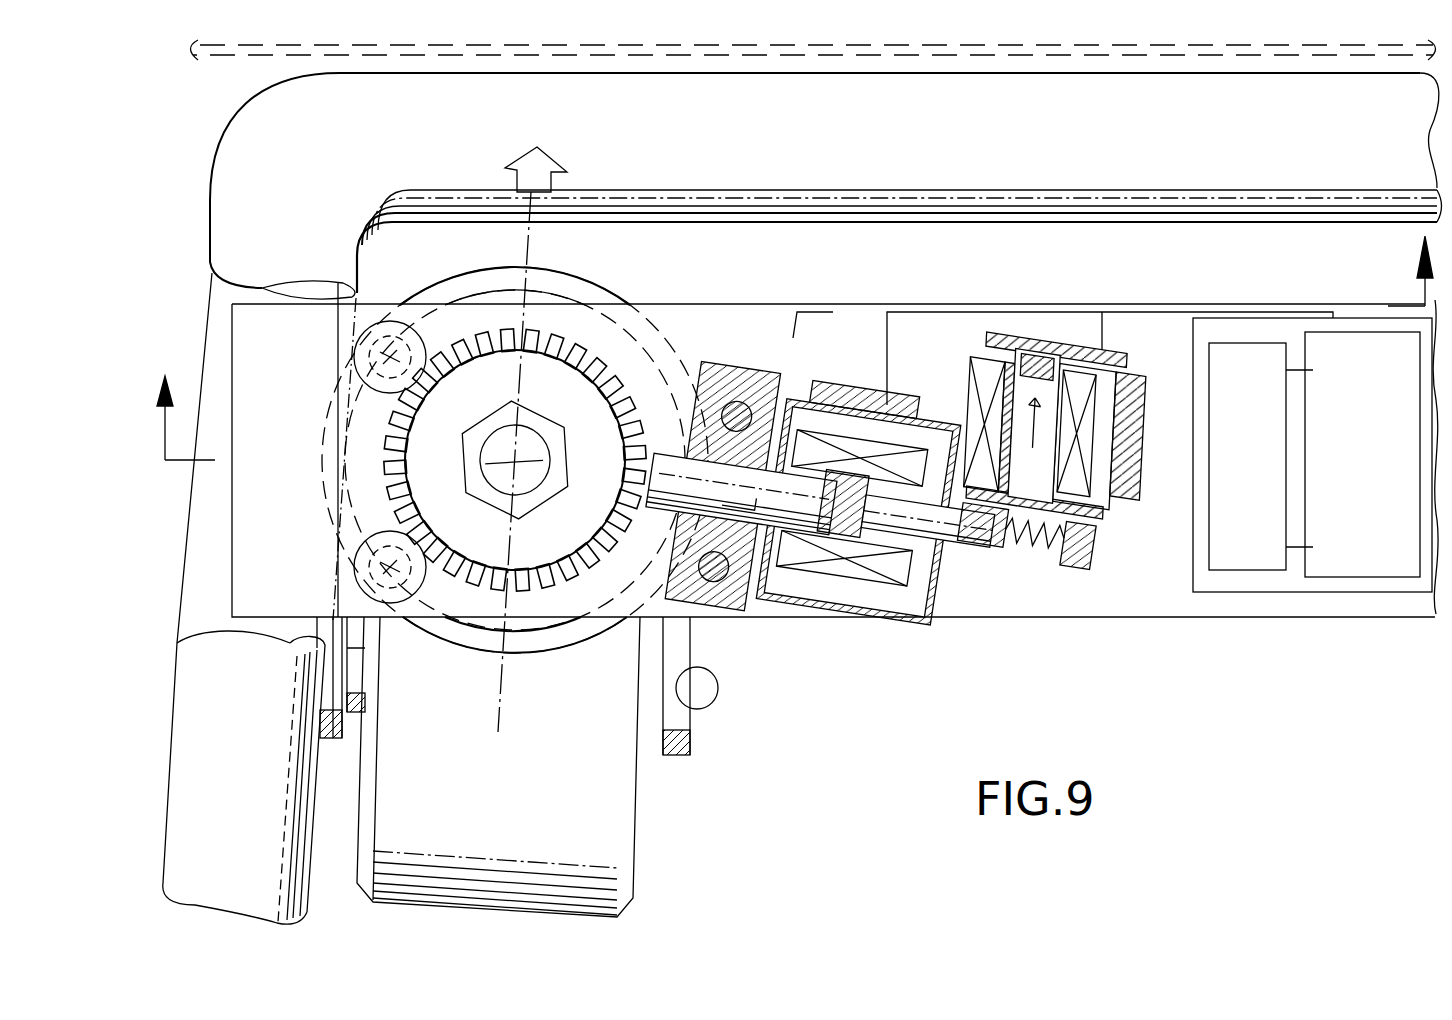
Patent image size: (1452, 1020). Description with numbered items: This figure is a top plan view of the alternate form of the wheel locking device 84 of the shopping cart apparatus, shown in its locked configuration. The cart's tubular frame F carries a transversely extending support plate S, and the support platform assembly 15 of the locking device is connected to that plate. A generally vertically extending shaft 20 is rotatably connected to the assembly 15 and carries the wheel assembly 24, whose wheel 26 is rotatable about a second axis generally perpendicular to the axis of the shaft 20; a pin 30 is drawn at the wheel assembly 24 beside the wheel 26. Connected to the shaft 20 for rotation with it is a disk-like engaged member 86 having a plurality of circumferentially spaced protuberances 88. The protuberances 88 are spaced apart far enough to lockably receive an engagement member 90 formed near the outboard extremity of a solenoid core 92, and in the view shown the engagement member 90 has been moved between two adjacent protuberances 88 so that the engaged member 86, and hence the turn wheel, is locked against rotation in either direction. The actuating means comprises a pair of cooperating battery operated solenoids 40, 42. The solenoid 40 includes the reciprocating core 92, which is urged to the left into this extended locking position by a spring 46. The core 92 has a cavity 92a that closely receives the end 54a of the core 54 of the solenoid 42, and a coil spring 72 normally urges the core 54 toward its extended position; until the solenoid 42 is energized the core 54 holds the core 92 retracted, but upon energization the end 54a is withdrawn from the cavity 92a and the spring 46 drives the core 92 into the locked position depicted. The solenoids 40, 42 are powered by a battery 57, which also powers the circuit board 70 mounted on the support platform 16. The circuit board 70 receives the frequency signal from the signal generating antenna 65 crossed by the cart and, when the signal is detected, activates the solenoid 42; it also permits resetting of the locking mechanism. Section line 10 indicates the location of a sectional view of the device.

The section line 10 is at (795, 370).
The support platform assembly 15 is at (762, 300).
The support platform 16 is at (1155, 600).
The shaft 20 is at (497, 480).
The wheel assembly 24 is at (704, 727).
The wheel 26 is at (600, 870).
The pivot pin 30 is at (680, 688).
The solenoid 40 is at (847, 388).
The solenoid 42 is at (987, 385).
The spring 46 is at (1095, 537).
The core 54 is at (1023, 418).
The end 54a is at (1035, 505).
The battery 57 is at (1251, 565).
The signal generating antenna 65 is at (945, 60).
The circuit board 70 is at (1378, 560).
The coil spring 72 is at (1040, 350).
The wheel locking device 84 is at (960, 318).
The engaged member 86 is at (515, 473).
The protuberances 88 is at (472, 333).
The engagement member 90 is at (633, 477).
The solenoid core 92 is at (885, 512).
The cavity 92a is at (988, 548).
The tubular frame F is at (1124, 187).
The support plate S is at (252, 330).